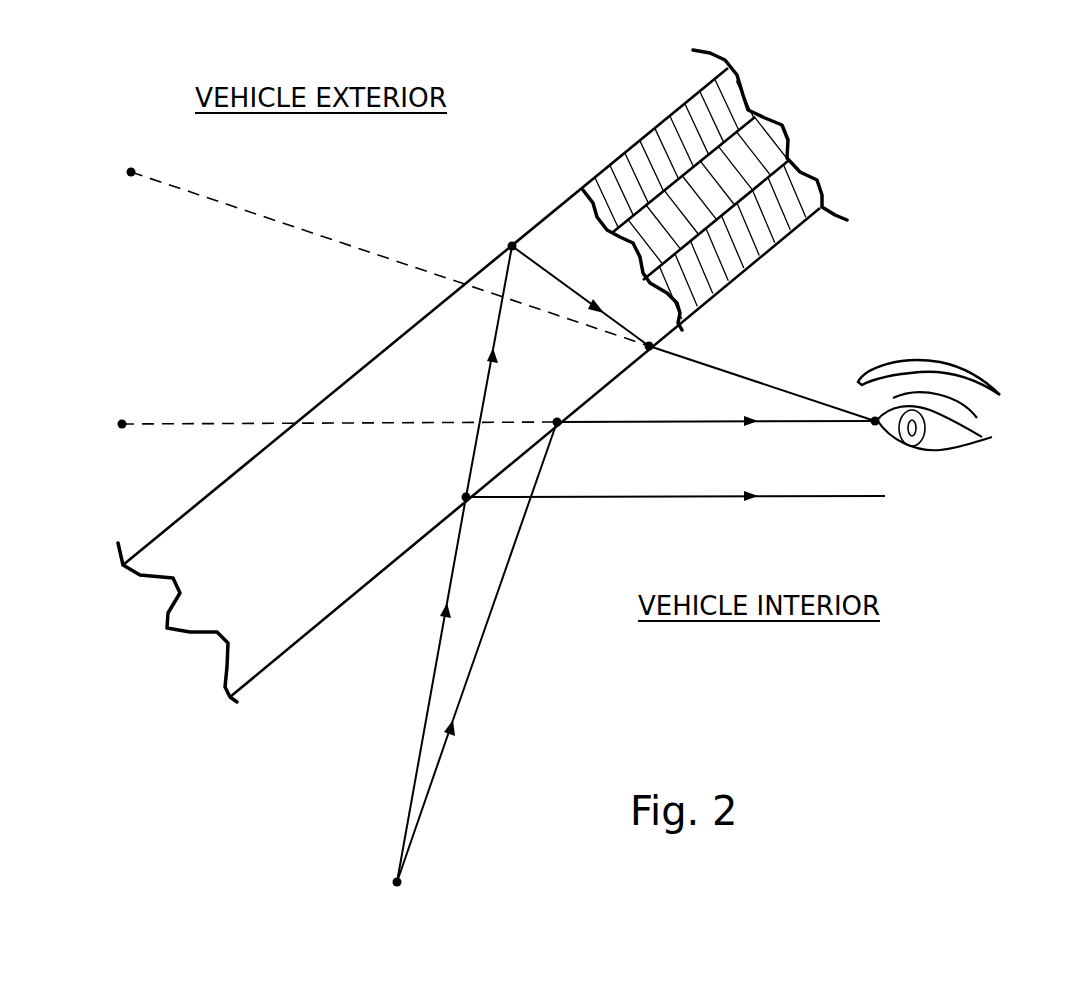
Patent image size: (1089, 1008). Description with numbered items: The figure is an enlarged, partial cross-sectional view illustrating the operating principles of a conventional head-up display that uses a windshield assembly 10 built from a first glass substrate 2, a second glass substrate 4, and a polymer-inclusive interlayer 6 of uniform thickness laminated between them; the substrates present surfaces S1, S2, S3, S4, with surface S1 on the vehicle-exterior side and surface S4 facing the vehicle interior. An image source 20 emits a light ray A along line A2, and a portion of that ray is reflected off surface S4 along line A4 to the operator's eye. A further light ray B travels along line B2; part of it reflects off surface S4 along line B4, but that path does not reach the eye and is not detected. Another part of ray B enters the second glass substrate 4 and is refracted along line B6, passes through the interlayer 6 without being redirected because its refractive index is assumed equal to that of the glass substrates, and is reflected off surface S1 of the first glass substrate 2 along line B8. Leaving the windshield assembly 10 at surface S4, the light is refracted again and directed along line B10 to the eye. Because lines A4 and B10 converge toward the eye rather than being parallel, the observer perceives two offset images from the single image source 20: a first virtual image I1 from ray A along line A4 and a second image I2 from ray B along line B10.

The first glass substrate 2 is at (742, 88).
The second glass substrate 4 is at (807, 183).
The interlayer 6 is at (777, 118).
The windshield assembly 10 is at (128, 664).
The image source 20 is at (392, 902).
The surface of the first glass substrate S1 is at (640, 138).
The surface of the first glass substrate S2 is at (610, 168).
The surface of the second glass substrate S3 is at (790, 137).
The surface of the second glass substrate S4 is at (765, 255).
The light ray A is at (432, 787).
The line A2 is at (487, 630).
The line A4 is at (638, 422).
The light ray B is at (435, 672).
The line B2 is at (455, 560).
The line B4 is at (632, 497).
The line B6 is at (488, 382).
The line B8 is at (535, 262).
The line B10 is at (740, 375).
The first image I1 is at (317, 427).
The second image I2 is at (368, 253).